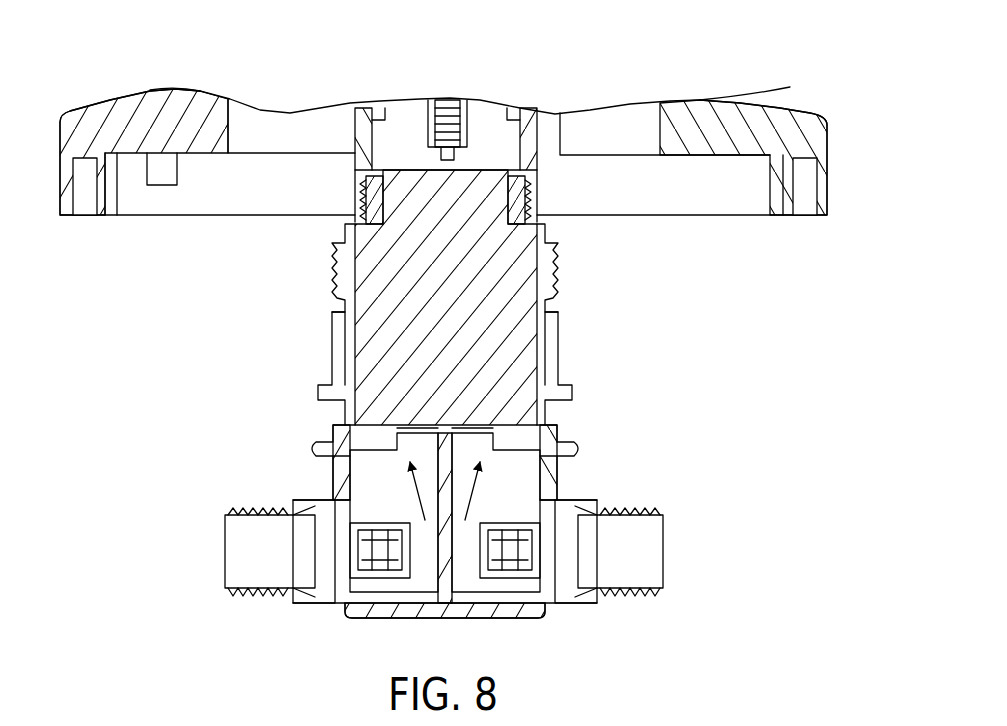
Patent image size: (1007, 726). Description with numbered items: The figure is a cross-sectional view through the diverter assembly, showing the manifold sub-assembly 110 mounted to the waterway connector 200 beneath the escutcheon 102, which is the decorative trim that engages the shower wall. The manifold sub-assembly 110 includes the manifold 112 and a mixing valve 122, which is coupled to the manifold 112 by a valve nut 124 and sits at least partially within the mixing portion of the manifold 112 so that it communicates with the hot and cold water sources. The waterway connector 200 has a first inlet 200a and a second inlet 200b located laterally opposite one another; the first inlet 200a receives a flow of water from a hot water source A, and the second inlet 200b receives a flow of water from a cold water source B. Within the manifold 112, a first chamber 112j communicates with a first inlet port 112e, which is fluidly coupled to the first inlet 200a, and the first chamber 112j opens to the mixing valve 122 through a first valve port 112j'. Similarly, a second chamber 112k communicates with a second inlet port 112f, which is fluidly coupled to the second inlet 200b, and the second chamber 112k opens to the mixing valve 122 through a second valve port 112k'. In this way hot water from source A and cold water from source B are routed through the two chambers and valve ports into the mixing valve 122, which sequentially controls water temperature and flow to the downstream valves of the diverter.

The escutcheon 102 is at (787, 112).
The manifold sub-assembly 110 is at (705, 318).
The manifold 112 is at (571, 416).
The first chamber 112j is at (341, 512).
The second chamber 112k is at (548, 512).
The first valve port 112j' is at (346, 373).
The second valve port 112k' is at (550, 374).
The first inlet port 112e is at (380, 580).
The second inlet port 112f is at (517, 580).
The mixing valve 122 is at (463, 319).
The valve nut 124 is at (520, 137).
The waterway connector 200 is at (558, 618).
The first inlet 200a is at (250, 598).
The second inlet 200b is at (640, 598).
The hot water source A is at (332, 551).
The cold water source B is at (552, 551).